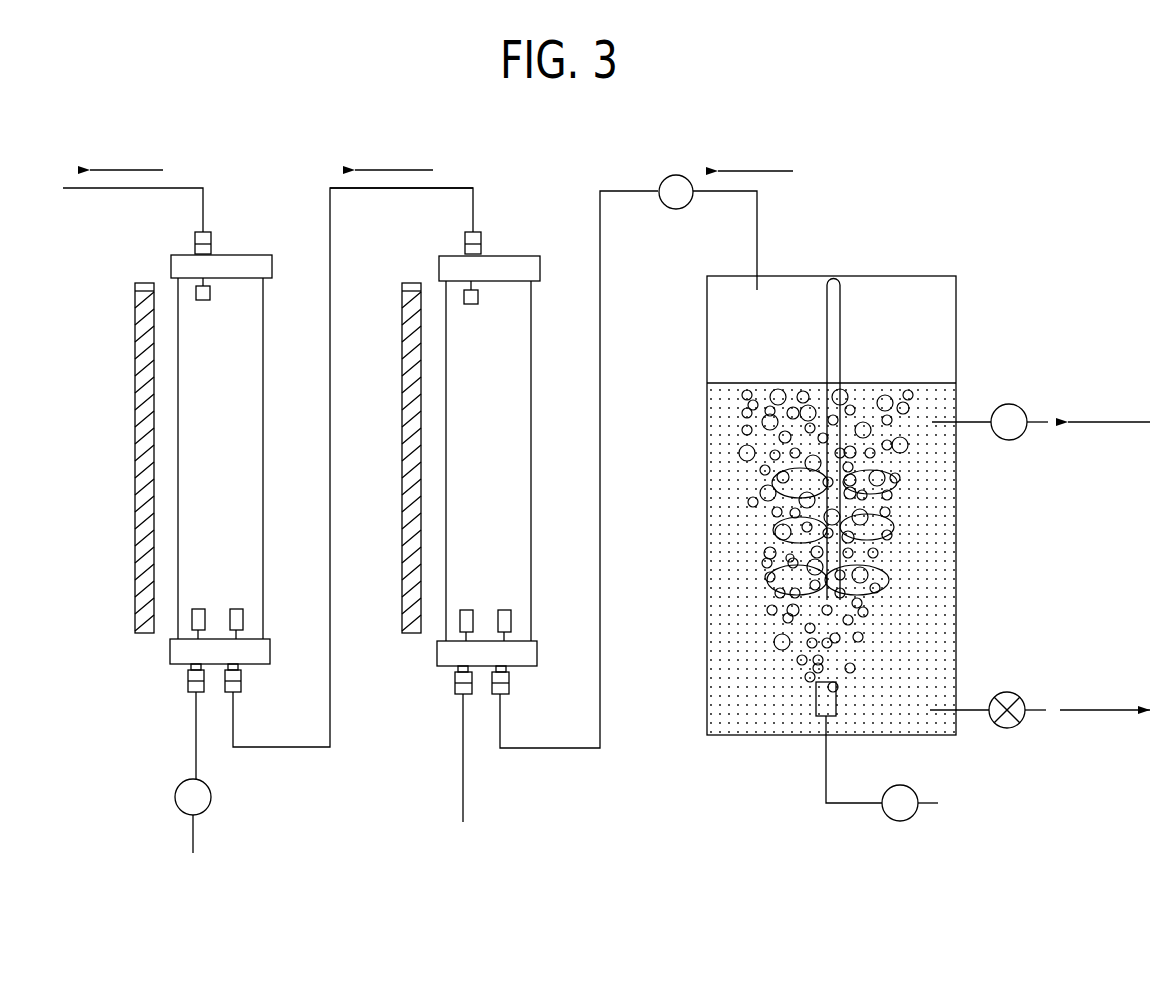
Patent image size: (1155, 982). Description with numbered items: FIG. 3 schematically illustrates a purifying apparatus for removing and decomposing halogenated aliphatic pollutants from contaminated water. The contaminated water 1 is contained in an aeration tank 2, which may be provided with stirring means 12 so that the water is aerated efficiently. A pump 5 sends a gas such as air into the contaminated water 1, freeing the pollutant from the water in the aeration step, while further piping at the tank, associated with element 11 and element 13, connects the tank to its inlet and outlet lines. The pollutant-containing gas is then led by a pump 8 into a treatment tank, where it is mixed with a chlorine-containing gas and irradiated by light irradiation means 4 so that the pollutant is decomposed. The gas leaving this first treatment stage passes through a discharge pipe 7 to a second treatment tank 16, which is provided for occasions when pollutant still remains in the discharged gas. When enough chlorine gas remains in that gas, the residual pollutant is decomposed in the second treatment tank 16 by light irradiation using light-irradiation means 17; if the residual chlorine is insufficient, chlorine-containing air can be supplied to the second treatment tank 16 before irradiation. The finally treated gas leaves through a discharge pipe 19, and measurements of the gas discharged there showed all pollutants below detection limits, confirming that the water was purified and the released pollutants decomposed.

The contaminated water 1 is at (940, 555).
The aeration tank 2 is at (926, 284).
The light irradiation means 4 is at (405, 366).
The pump 5 is at (892, 820).
The discharge pipe 7 is at (385, 190).
The pump 8 is at (680, 178).
The inlet pump 11 is at (1024, 411).
The stirring means 12 is at (835, 290).
The column / outlet valve 13 is at (522, 363).
The second treatment tank 16 is at (254, 361).
The light-irradiation means 17 is at (135, 345).
The discharge pipe 19 is at (113, 190).